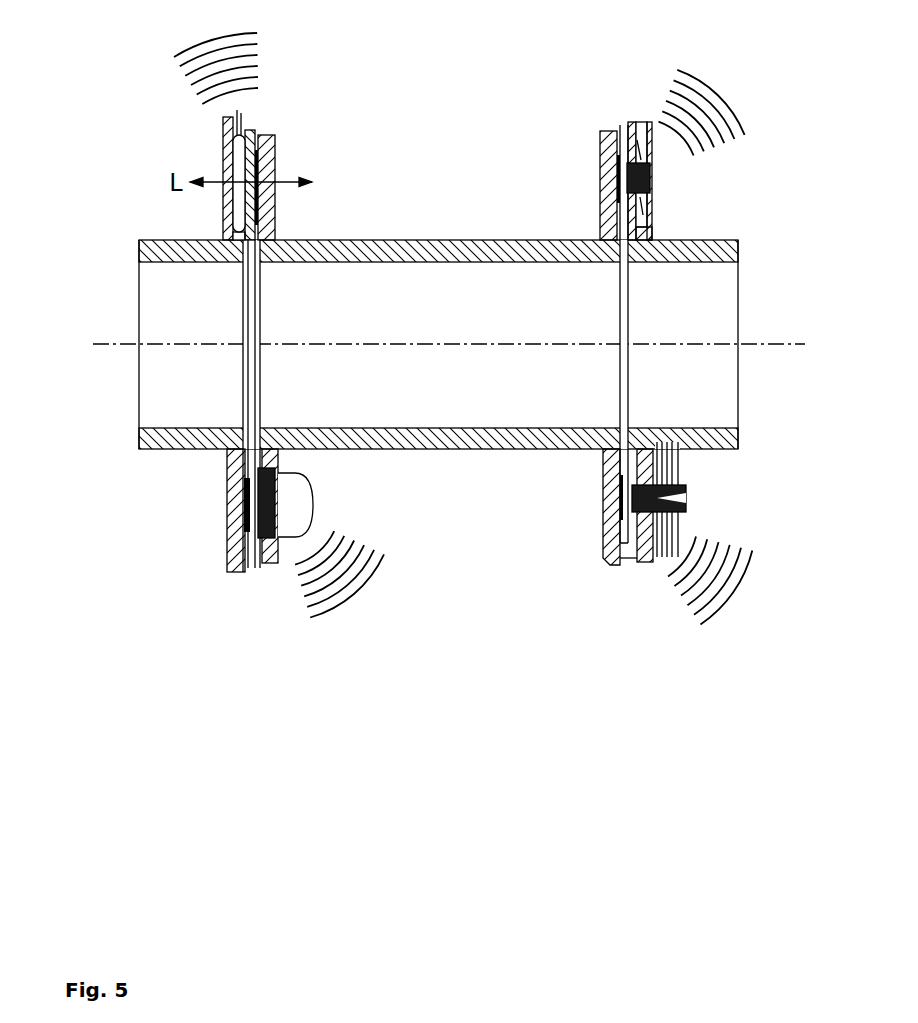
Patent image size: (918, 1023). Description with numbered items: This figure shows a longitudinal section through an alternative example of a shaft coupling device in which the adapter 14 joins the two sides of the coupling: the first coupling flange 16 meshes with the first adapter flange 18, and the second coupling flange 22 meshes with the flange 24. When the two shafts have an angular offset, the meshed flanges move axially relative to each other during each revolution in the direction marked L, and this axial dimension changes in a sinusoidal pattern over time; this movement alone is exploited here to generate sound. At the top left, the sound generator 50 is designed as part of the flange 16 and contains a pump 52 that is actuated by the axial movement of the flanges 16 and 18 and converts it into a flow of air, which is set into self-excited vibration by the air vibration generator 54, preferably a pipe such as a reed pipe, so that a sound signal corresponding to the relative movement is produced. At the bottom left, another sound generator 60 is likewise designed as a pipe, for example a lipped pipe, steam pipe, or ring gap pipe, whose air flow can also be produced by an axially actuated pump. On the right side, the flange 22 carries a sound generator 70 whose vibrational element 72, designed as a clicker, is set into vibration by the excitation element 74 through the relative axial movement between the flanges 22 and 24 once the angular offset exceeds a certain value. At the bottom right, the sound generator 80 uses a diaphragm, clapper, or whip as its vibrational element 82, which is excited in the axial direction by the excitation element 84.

The adapter 14 is at (498, 450).
The first coupling flange 16 is at (225, 222).
The first adapter flange 18 is at (280, 157).
The second coupling flange 22 is at (640, 125).
The flange 24 is at (605, 157).
The sound generator 50 is at (192, 130).
The pump 52 is at (232, 163).
The air vibration generator 54 is at (243, 118).
The sound generator 60 is at (318, 501).
The sound generator 70 is at (663, 143).
The vibrational element 72 is at (648, 210).
The excitation element 74 is at (648, 183).
The sound generator 80 is at (693, 523).
The vibrational element 82 is at (668, 548).
The excitation element 84 is at (660, 497).